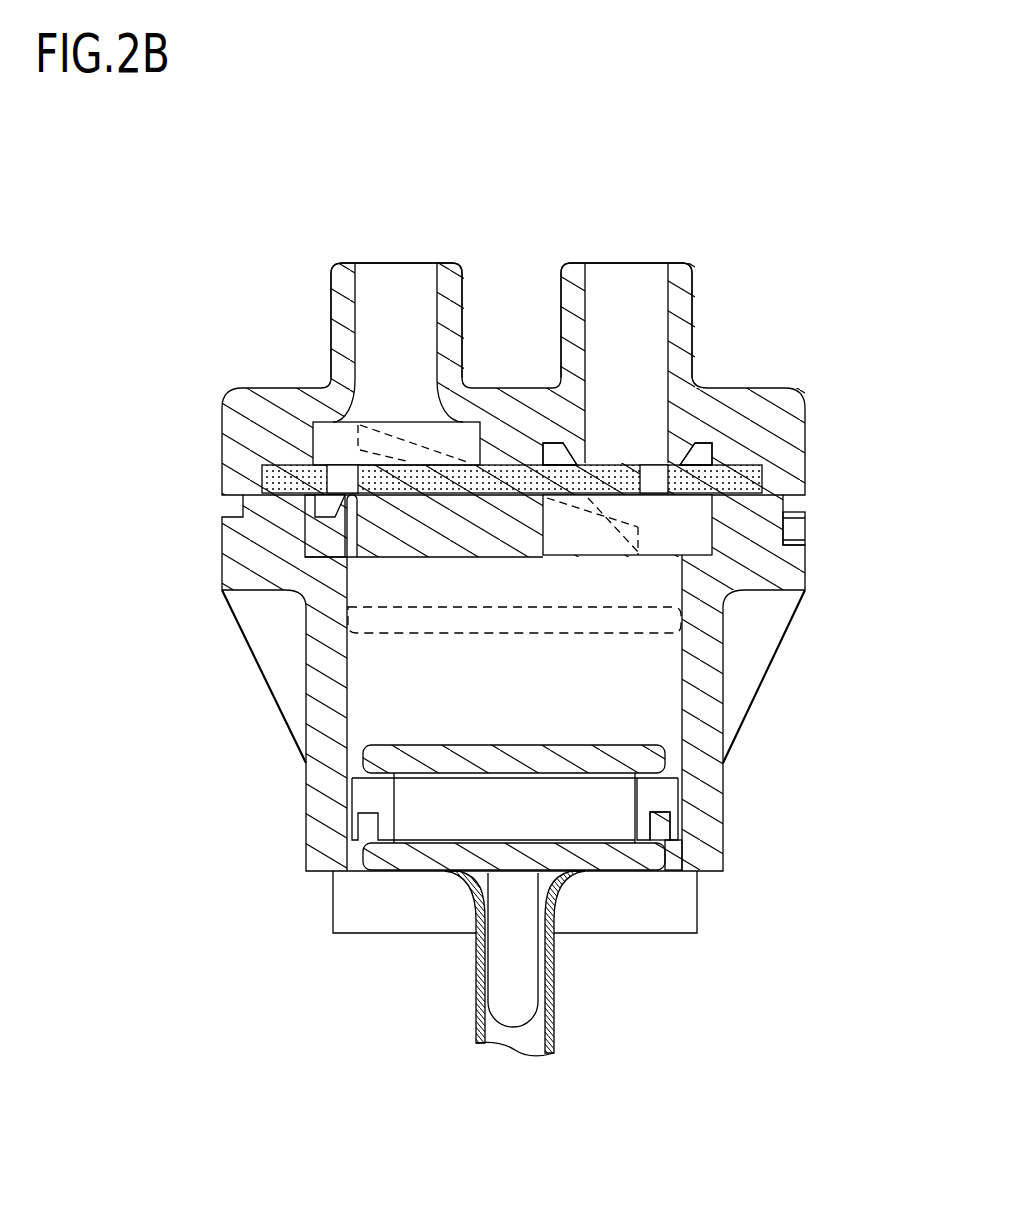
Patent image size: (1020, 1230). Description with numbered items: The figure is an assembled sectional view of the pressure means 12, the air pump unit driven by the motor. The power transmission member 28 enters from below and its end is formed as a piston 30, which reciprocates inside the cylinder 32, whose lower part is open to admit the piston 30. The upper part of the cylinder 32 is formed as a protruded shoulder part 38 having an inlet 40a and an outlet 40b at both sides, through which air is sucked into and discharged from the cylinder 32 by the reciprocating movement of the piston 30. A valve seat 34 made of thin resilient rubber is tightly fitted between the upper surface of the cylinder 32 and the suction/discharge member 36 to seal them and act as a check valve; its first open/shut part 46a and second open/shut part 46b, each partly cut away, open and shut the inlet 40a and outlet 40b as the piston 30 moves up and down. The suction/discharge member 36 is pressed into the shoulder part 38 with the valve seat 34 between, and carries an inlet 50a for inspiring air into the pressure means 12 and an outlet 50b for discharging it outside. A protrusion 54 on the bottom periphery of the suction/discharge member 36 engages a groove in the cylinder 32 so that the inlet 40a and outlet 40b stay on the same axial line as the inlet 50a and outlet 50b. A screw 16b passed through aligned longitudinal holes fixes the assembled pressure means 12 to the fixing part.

The pressure means 12 is at (168, 363).
The screw 16b is at (535, 985).
The power transmission member 28 is at (478, 1021).
The piston 30 is at (377, 758).
The cylinder 32 is at (530, 728).
The valve seat 34 is at (268, 479).
The suction/discharge member 36 is at (491, 481).
The shoulder part 38 is at (300, 523).
The inlet 40a is at (718, 505).
The outlet 40b is at (350, 467).
The first open/shut part 46a is at (737, 333).
The second open/shut part 46b is at (272, 328).
The inlet 50a is at (612, 277).
The outlet 50b is at (388, 272).
The protrusion 54 is at (795, 503).